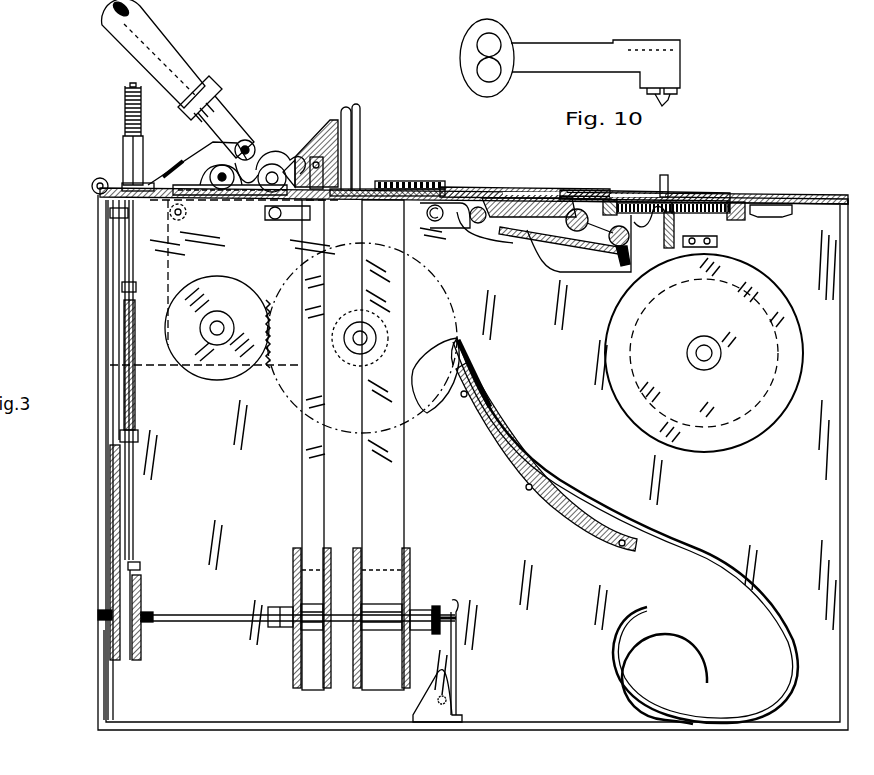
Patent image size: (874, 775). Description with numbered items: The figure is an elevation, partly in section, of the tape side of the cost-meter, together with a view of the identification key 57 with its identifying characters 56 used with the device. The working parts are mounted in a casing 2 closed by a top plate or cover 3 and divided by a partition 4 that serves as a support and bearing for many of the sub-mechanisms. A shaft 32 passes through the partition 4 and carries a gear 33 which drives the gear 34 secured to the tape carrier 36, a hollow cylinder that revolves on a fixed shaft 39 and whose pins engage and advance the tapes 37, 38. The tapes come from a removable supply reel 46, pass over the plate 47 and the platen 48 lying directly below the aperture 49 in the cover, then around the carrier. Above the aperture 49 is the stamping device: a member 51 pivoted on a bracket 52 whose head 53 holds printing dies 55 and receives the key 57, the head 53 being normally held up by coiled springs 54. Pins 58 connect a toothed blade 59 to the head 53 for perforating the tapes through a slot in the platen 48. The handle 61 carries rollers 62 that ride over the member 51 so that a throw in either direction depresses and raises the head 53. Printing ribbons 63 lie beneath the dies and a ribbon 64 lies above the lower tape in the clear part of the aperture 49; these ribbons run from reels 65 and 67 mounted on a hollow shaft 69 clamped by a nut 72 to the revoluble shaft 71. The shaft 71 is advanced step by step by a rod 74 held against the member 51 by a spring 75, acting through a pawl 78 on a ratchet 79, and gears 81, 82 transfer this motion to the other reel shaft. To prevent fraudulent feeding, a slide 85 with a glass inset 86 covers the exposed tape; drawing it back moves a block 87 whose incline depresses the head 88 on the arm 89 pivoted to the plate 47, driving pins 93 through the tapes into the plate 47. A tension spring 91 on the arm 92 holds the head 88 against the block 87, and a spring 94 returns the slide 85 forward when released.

In FIG. 3, the casing 2 is at (838, 580).
In FIG. 3, the top plate or cover 3 is at (800, 200).
In FIG. 3, the partition 4 is at (714, 496).
In FIG. 3, the shaft 32 is at (217, 328).
In FIG. 3, the gear 33 is at (253, 334).
In FIG. 3, the gear 34 is at (362, 338).
In FIG. 3, the tape carrier 36 is at (430, 415).
In FIG. 3, the tape 37 is at (482, 224).
In FIG. 3, the tape 38 is at (491, 224).
In FIG. 3, the fixed shaft 39 is at (360, 338).
In FIG. 3, the supply reel 46 is at (704, 353).
In FIG. 3, the plate 47 is at (555, 252).
In FIG. 3, the platen 48 is at (355, 190).
In FIG. 3, the aperture 49 is at (400, 182).
In FIG. 3, the member 51 is at (270, 160).
In FIG. 3, the bracket 52 is at (232, 190).
In FIG. 3, the head 53 is at (326, 120).
In FIG. 3, the coiled springs 54 is at (124, 120).
In FIG. 3, the printing dies 55 is at (296, 160).
In FIG. 10, the identifying characters 56 is at (668, 104).
In FIG. 10, the key 57 is at (570, 58).
In FIG. 3, the pins 58 is at (360, 120).
In FIG. 3, the blade 59 is at (355, 145).
In FIG. 3, the handle 61 is at (185, 85).
In FIG. 3, the rollers 62 is at (248, 140).
In FIG. 3, the printing ribbons 63 is at (302, 522).
In FIG. 3, the printing ribbon 64 is at (383, 445).
In FIG. 3, the reel 65 is at (295, 648).
In FIG. 3, the reel 67 is at (354, 685).
In FIG. 3, the hollow shaft 69 is at (340, 608).
In FIG. 3, the shaft 71 is at (193, 614).
In FIG. 3, the nut 72 is at (444, 606).
In FIG. 3, the rod 74 is at (130, 262).
In FIG. 3, the spring 75 is at (137, 395).
In FIG. 3, the pawl 78 is at (142, 568).
In FIG. 3, the ratchet 79 is at (140, 594).
In FIG. 3, the gear 81 is at (110, 600).
In FIG. 3, the gear 82 is at (112, 492).
In FIG. 3, the slide 85 is at (565, 197).
In FIG. 3, the glass inset 86 is at (425, 186).
In FIG. 3, the block or plate 87 is at (535, 200).
In FIG. 3, the head 88 is at (612, 200).
In FIG. 3, the arm 89 is at (603, 232).
In FIG. 3, the tension spring 91 is at (622, 239).
In FIG. 3, the arm 92 is at (668, 196).
In FIG. 3, the pins 93 is at (566, 223).
In FIG. 3, the spring 94 is at (737, 200).